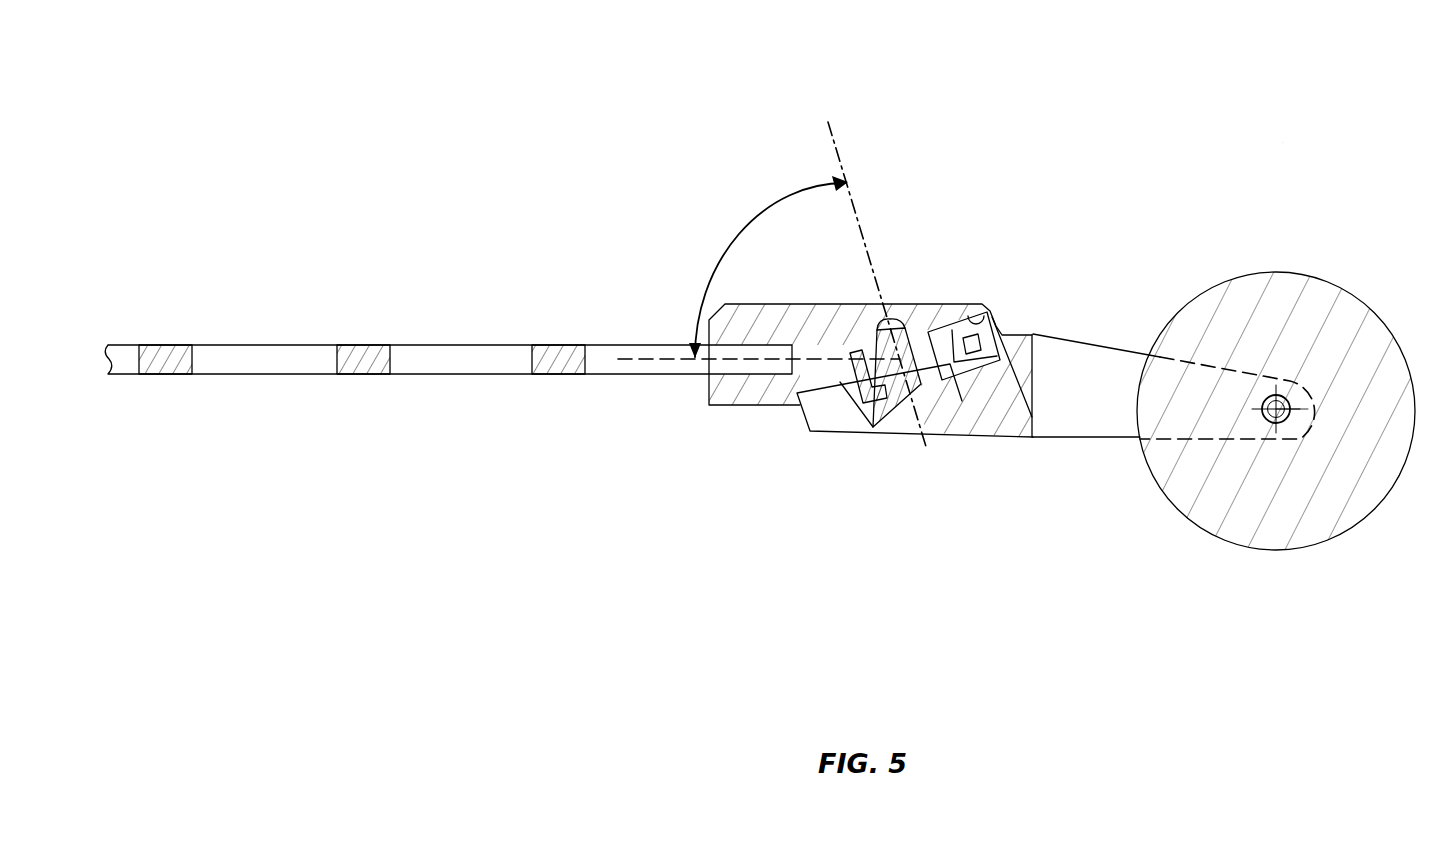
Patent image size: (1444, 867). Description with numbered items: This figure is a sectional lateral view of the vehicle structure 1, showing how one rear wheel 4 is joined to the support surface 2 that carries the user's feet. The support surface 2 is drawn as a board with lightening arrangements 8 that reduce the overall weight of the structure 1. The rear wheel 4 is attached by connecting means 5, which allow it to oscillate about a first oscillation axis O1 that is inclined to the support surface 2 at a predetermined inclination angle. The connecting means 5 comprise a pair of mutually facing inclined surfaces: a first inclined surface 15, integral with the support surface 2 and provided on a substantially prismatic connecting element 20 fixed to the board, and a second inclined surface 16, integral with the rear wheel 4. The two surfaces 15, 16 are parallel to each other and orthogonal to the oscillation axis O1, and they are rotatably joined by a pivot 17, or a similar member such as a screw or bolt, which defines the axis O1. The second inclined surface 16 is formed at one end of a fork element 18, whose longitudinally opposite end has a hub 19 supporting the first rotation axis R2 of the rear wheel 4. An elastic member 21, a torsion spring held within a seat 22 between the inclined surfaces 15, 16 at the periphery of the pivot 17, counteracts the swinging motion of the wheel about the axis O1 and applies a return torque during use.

The vehicle structure 1 is at (1282, 142).
The support surface 2 is at (146, 334).
The rear wheel 4 is at (1332, 538).
The connecting means 5 is at (965, 228).
The lightening arrangements 8 is at (460, 351).
The first inclined surface 15 is at (978, 307).
The second inclined surface 16 is at (836, 410).
The pivot 17 is at (925, 400).
The fork element 18 is at (1085, 418).
The hub 19 is at (1290, 425).
The prismatic connecting element 20 is at (904, 305).
The elastic member 21 is at (996, 433).
The seat 22 is at (801, 416).
The first oscillation axis O1 is at (833, 143).
The first rotation axis R2 is at (1288, 398).